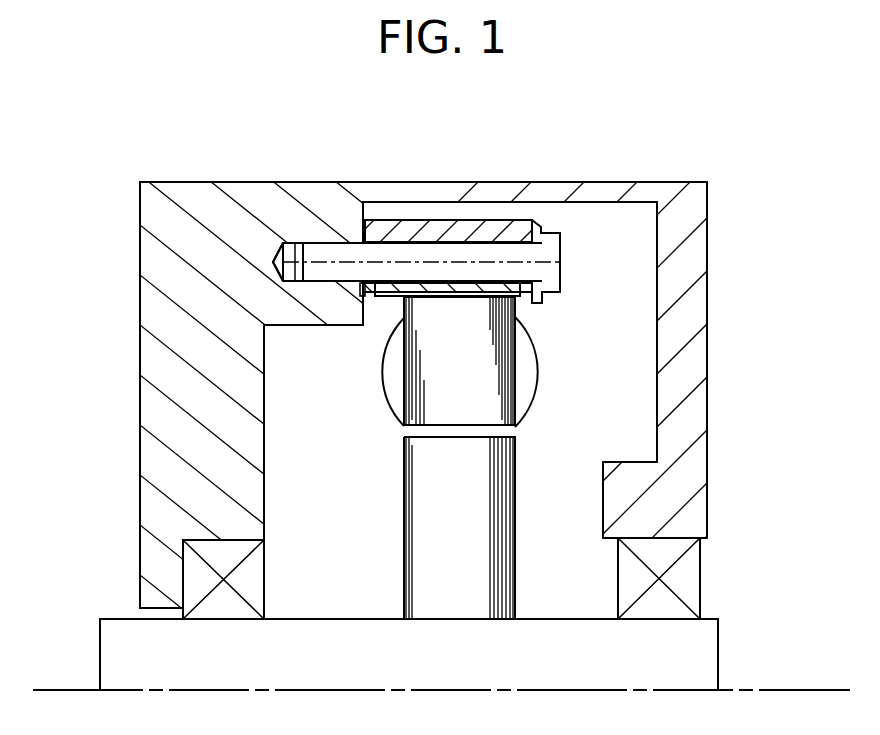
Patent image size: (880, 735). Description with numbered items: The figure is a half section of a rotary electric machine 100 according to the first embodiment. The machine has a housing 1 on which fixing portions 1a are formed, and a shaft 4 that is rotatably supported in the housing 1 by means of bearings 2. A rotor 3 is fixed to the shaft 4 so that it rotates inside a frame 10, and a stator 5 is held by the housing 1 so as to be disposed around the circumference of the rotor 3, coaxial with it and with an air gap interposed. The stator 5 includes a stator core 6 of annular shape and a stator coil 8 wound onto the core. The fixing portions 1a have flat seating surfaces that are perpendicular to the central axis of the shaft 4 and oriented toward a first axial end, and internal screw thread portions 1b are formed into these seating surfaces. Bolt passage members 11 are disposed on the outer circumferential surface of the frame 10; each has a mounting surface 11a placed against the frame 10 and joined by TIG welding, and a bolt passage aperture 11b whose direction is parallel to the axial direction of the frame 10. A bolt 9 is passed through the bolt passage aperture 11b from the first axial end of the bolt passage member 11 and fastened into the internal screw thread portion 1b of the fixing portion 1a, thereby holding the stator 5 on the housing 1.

The rotary electric machine 100 is at (131, 119).
The housing 1 is at (152, 407).
The fixing portion 1a is at (343, 228).
The internal screw thread portion 1b is at (317, 243).
The bearing 2 is at (192, 575).
The rotor 3 is at (403, 505).
The shaft 4 is at (708, 638).
The stator 5 is at (408, 367).
The stator core 6 is at (425, 338).
The stator coil 8 is at (385, 388).
The bolt 9 is at (560, 269).
The frame 10 is at (513, 296).
The bolt passage member 11 is at (423, 220).
The mounting surface 11a is at (495, 283).
The bolt passage aperture 11b is at (477, 243).